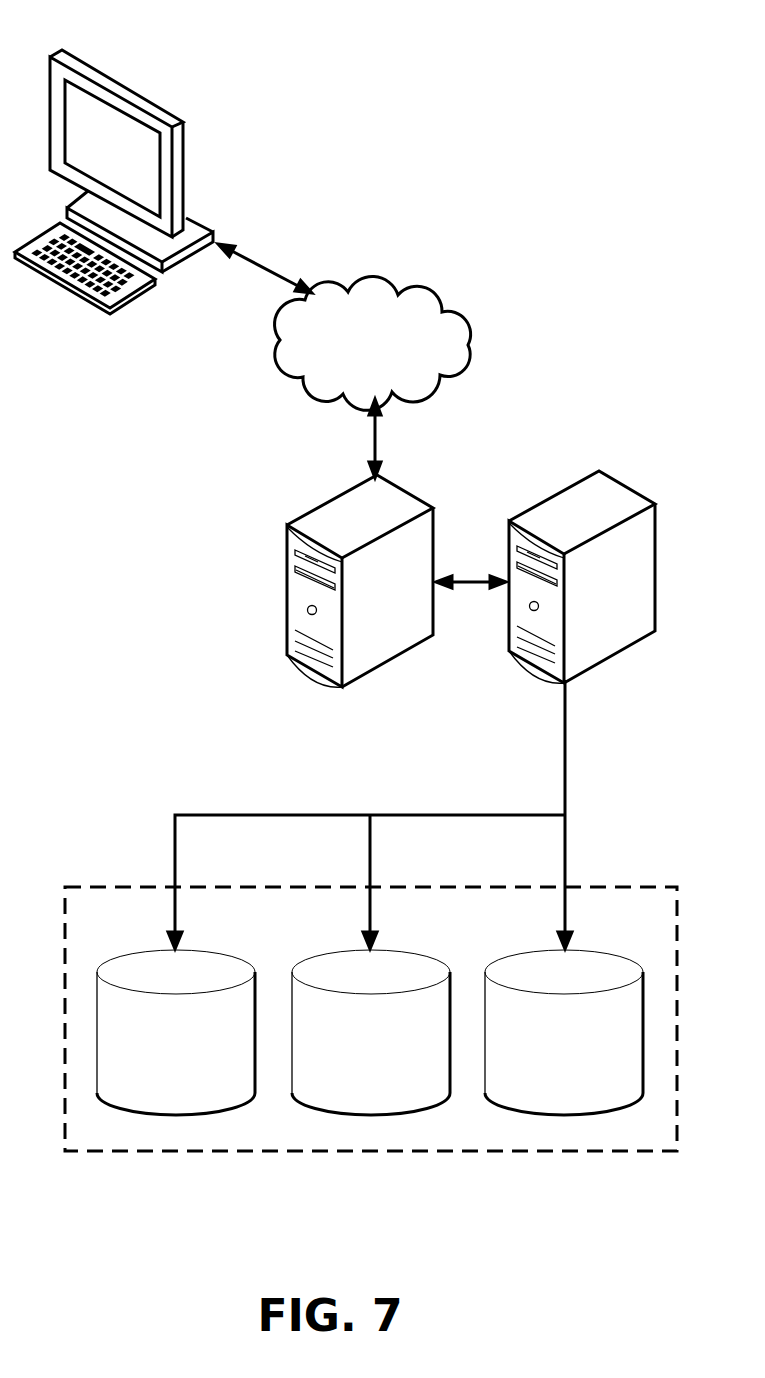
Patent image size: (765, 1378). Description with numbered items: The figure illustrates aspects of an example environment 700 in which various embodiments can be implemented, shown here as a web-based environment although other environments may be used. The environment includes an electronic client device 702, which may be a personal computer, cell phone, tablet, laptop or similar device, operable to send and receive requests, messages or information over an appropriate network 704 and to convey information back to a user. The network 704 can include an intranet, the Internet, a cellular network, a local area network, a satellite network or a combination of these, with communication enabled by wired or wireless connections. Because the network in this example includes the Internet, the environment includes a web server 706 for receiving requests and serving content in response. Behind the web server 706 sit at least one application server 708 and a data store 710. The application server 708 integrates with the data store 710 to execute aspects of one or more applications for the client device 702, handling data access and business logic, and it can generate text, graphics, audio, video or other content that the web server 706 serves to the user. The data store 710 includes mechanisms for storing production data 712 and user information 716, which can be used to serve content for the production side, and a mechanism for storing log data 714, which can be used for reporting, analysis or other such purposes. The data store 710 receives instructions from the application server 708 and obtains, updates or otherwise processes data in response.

The environment 700 is at (619, 332).
The electronic client device 702 is at (135, 88).
The network 704 is at (412, 290).
The web server 706 is at (286, 578).
The application server 708 is at (532, 672).
The data store 710 is at (100, 1152).
The production data 712 is at (176, 1116).
The log data 714 is at (371, 1116).
The user information 716 is at (563, 1116).